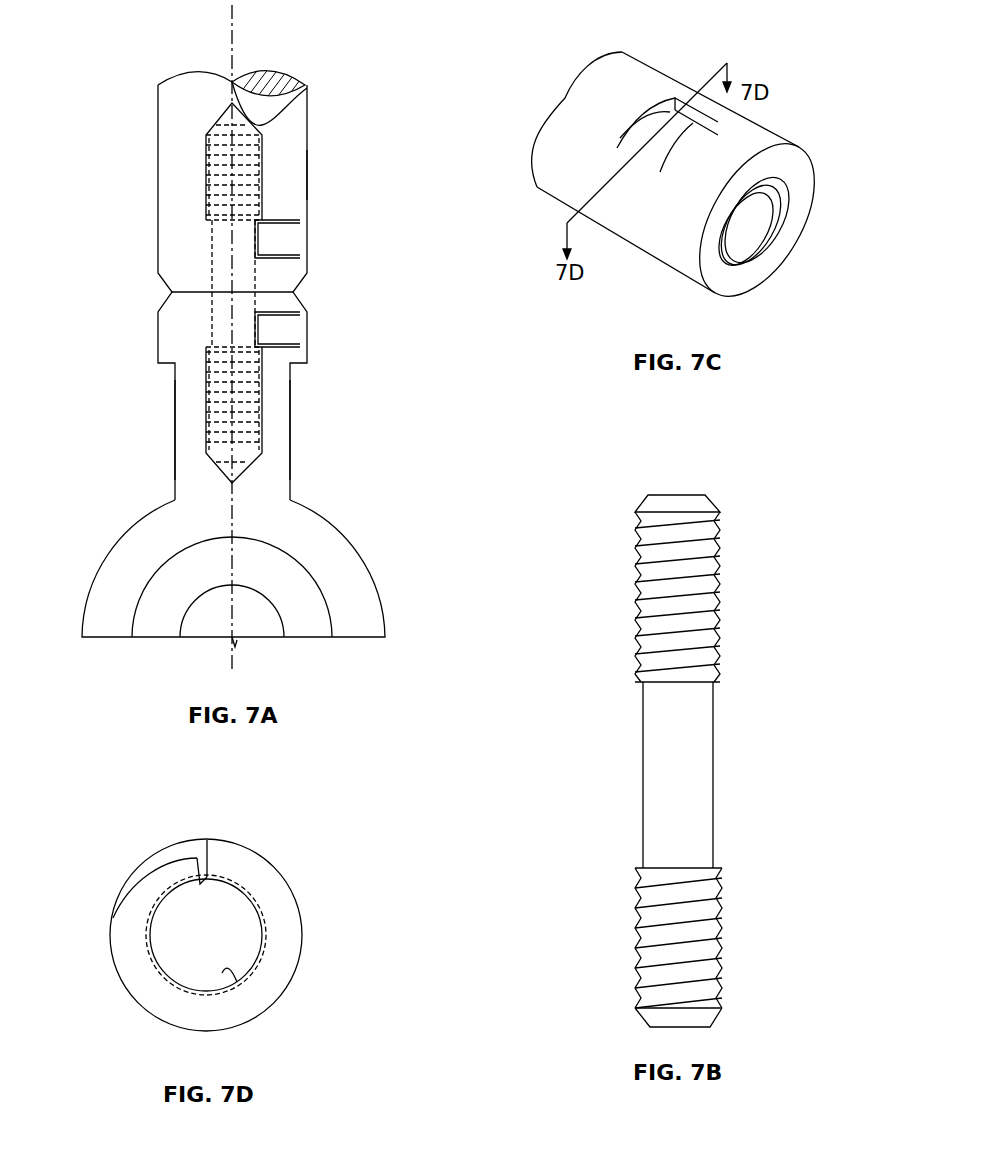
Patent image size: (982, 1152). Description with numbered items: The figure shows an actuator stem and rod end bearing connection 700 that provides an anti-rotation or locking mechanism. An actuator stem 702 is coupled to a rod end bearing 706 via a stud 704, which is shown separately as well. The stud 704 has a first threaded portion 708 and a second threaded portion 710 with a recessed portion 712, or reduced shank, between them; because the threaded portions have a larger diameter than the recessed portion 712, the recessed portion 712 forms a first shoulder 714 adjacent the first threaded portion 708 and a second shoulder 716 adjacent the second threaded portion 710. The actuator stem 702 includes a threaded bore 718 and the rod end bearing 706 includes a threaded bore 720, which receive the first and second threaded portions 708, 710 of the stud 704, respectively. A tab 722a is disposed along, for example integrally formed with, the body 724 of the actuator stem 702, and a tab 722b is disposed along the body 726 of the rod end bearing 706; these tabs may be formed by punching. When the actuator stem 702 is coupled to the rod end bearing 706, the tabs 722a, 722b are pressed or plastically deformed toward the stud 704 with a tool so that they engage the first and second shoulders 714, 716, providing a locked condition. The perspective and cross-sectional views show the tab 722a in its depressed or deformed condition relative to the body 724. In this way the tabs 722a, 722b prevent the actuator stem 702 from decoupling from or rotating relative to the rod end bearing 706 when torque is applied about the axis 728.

In FIG. 7A, the actuator stem and rod end bearing connection 700 is at (140, 63).
In FIG. 7A, the actuator stem 702 is at (158, 170).
In FIG. 7C, the actuator stem 702 is at (663, 263).
In FIG. 7D, the actuator stem 702 is at (120, 982).
In FIG. 7A, the stud 704 is at (207, 275).
In FIG. 7B, the stud 704 is at (638, 623).
In FIG. 7A, the rod end bearing 706 is at (135, 523).
In FIG. 7B, the first threaded portion 708 is at (718, 623).
In FIG. 7B, the second threaded portion 710 is at (722, 955).
In FIG. 7B, the recessed portion 712 is at (720, 778).
In FIG. 7A, the first shoulder 714 is at (263, 212).
In FIG. 7B, the first shoulder 714 is at (715, 684).
In FIG. 7A, the second shoulder 716 is at (260, 350).
In FIG. 7B, the second shoulder 716 is at (717, 862).
In FIG. 7A, the threaded bore 718 is at (250, 117).
In FIG. 7C, the threaded bore 718 is at (757, 253).
In FIG. 7D, the threaded bore 718 is at (230, 980).
In FIG. 7A, the threaded bore 720 is at (245, 473).
In FIG. 7A, the tab 722a is at (287, 240).
In FIG. 7C, the tab 722a is at (647, 140).
In FIG. 7D, the tab 722a is at (163, 862).
In FIG. 7A, the tab 722b is at (282, 333).
In FIG. 7A, the body 724 is at (307, 170).
In FIG. 7C, the body 724 is at (557, 155).
In FIG. 7D, the body 724 is at (290, 887).
In FIG. 7A, the body 726 is at (290, 418).
In FIG. 7A, the axis 728 is at (234, 42).